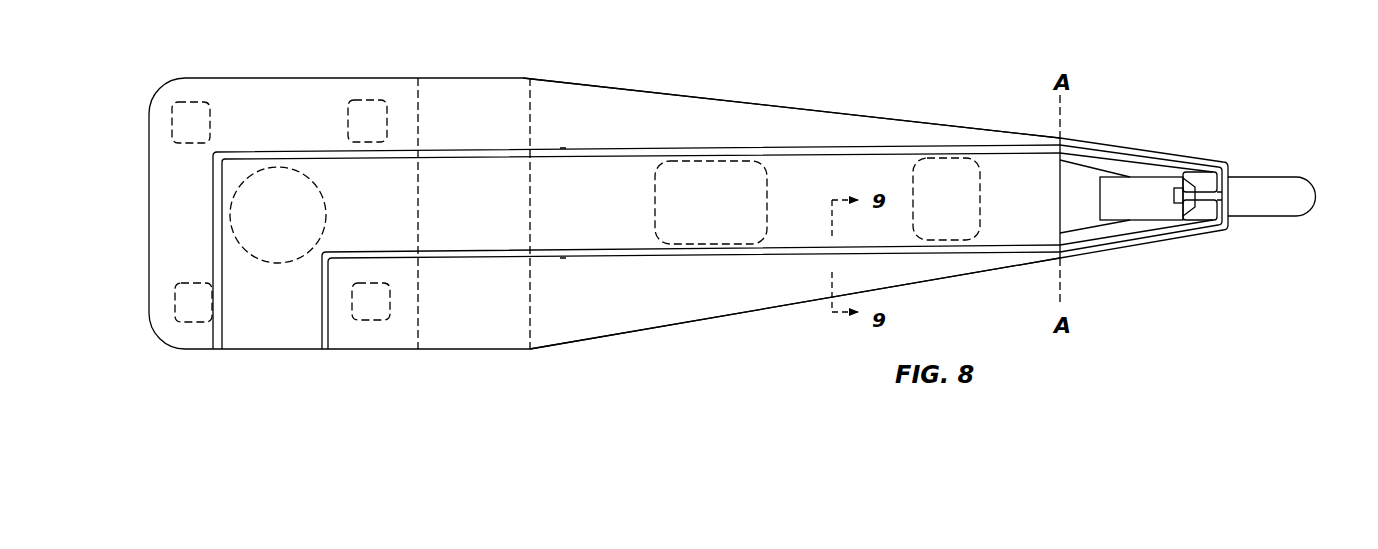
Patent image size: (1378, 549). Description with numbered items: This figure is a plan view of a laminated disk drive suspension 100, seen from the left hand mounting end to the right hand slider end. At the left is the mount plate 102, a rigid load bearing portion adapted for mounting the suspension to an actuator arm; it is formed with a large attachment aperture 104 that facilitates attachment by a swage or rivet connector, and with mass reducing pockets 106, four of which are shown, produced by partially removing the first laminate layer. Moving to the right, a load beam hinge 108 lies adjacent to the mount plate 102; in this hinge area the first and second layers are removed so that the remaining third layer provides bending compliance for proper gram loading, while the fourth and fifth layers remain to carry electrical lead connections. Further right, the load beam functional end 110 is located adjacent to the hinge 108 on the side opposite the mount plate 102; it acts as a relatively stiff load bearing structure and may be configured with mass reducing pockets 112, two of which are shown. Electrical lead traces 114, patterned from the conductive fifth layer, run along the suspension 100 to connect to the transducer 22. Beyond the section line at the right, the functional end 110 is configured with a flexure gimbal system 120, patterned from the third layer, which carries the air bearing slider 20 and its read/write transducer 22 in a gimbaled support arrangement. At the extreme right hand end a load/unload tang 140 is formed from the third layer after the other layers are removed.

The suspension 100 is at (190, 56).
The mount plate 102 is at (280, 397).
The attachment aperture 104 is at (297, 227).
The mass reducing pockets 106 is at (348, 122).
The load beam hinge 108 is at (498, 330).
The load beam functional end 110 is at (771, 352).
The mass reducing pockets 112 is at (728, 213).
The electrical lead traces 114 is at (563, 148).
The flexure gimbal system 120 is at (1163, 311).
The air bearing slider 20 is at (1155, 203).
The read/write transducer 22 is at (1180, 192).
The load/unload tang 140 is at (1275, 207).